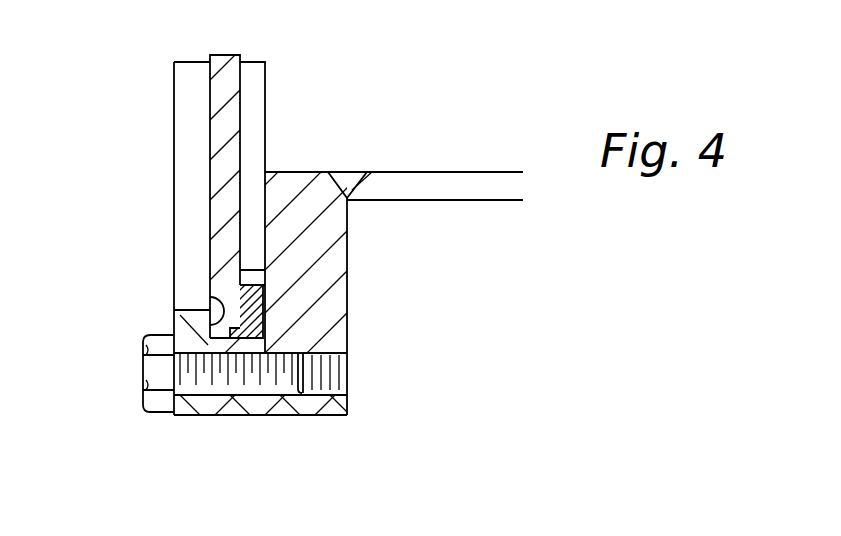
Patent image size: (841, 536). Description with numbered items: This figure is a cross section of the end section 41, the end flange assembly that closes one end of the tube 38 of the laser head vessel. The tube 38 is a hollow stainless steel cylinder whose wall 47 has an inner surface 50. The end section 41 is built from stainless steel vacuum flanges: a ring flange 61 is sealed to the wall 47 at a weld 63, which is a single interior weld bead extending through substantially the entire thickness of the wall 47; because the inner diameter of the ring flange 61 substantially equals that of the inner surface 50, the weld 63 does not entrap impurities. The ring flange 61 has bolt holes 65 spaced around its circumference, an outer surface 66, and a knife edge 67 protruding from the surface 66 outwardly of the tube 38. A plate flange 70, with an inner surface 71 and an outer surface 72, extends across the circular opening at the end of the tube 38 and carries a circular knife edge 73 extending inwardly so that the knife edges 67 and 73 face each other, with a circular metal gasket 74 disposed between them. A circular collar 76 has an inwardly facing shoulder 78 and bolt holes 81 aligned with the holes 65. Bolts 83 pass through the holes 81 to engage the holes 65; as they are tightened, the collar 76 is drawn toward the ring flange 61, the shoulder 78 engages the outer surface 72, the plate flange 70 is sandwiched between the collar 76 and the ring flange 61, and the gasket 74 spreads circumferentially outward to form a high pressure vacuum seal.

The tube 38 is at (532, 222).
The end section 41 is at (387, 357).
The wall 47 is at (457, 190).
The inner surface 50 is at (430, 172).
The ring flange 61 is at (330, 287).
The weld 63 is at (348, 172).
The bolt holes 65 is at (287, 413).
The outer surface 66 is at (240, 195).
The knife edge 67 is at (262, 332).
The plate flange 70 is at (222, 215).
The inner surface 71 is at (240, 118).
The outer surface 72 is at (212, 122).
The knife edge 73 is at (228, 410).
The metal gasket 74 is at (235, 290).
The collar 76 is at (183, 322).
The shoulder 78 is at (208, 297).
The bolt holes 81 is at (200, 405).
The bolts 83 is at (150, 410).